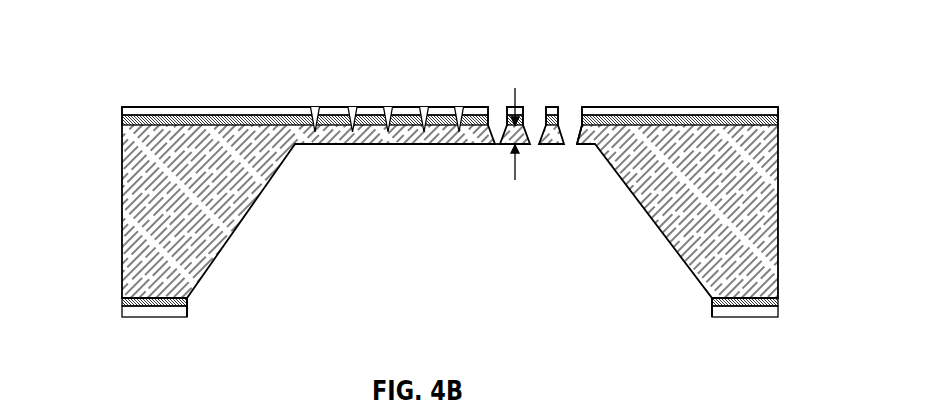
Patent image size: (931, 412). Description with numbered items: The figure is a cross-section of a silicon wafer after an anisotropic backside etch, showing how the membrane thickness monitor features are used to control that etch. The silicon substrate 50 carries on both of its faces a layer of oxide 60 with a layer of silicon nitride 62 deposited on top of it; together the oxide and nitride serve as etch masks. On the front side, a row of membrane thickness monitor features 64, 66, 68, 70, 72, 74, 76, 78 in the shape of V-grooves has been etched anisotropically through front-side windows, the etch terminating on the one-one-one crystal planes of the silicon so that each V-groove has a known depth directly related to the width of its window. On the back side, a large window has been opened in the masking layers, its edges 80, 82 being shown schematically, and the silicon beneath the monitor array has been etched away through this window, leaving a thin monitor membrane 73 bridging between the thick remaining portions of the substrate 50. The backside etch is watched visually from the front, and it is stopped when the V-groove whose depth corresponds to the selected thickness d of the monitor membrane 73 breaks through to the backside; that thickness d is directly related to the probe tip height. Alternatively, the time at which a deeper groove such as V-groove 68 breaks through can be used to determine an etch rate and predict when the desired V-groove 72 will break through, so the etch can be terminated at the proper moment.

The silicon substrate 50 is at (778, 213).
The layer of oxide 60 is at (122, 120).
The layer of silicon nitride 62 is at (122, 110).
The membrane thickness monitor feature 64 is at (577, 138).
The membrane thickness monitor feature 66 is at (539, 137).
The membrane thickness monitor feature 68 is at (494, 138).
The membrane thickness monitor feature 70 is at (459, 131).
The membrane thickness monitor feature 72 is at (424, 131).
The monitor membrane 73 is at (506, 137).
The membrane thickness monitor feature 74 is at (388, 131).
The membrane thickness monitor feature 76 is at (352, 131).
The membrane thickness monitor feature 78 is at (315, 131).
The edge of backside window 80 is at (189, 305).
The edge of backside window 82 is at (710, 305).
The thickness of monitor membrane d is at (522, 134).